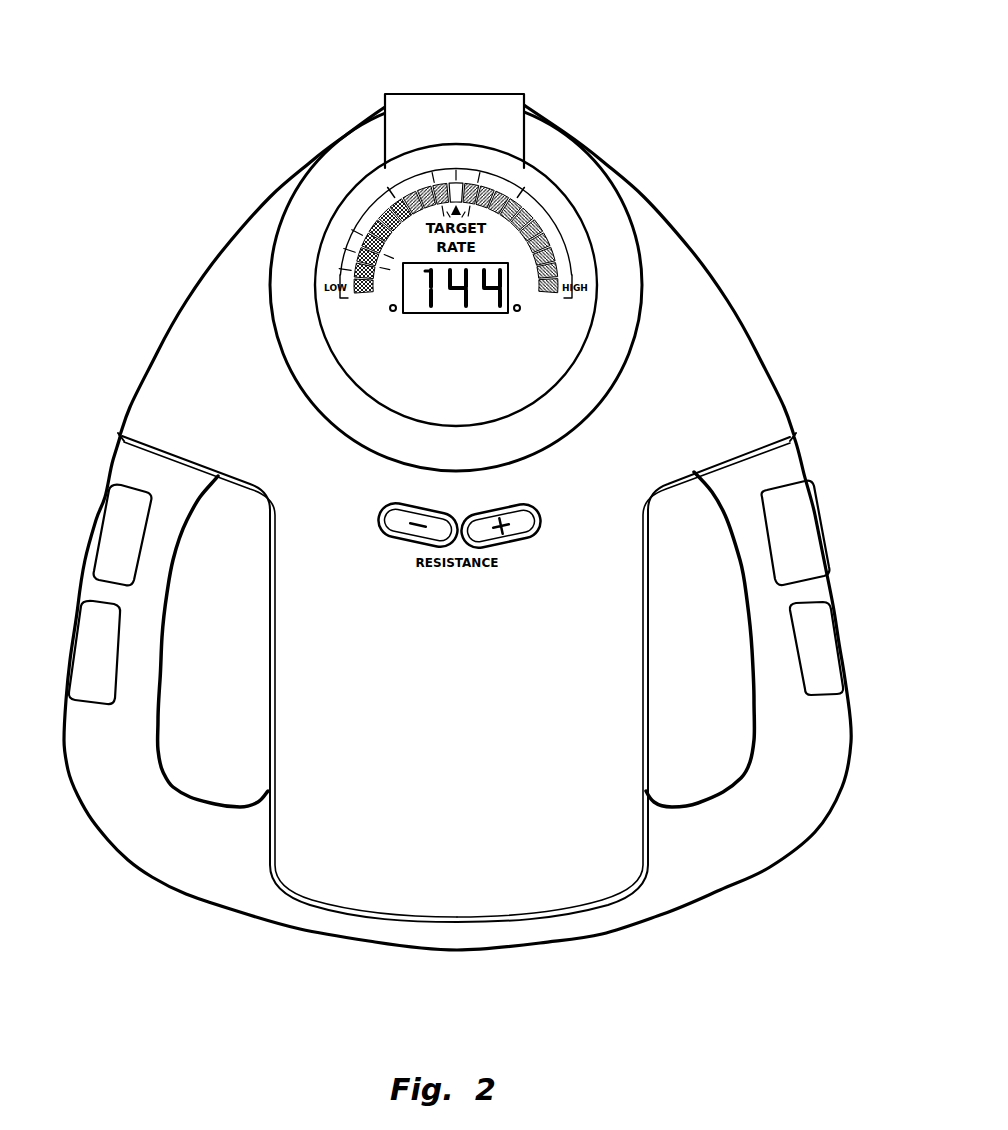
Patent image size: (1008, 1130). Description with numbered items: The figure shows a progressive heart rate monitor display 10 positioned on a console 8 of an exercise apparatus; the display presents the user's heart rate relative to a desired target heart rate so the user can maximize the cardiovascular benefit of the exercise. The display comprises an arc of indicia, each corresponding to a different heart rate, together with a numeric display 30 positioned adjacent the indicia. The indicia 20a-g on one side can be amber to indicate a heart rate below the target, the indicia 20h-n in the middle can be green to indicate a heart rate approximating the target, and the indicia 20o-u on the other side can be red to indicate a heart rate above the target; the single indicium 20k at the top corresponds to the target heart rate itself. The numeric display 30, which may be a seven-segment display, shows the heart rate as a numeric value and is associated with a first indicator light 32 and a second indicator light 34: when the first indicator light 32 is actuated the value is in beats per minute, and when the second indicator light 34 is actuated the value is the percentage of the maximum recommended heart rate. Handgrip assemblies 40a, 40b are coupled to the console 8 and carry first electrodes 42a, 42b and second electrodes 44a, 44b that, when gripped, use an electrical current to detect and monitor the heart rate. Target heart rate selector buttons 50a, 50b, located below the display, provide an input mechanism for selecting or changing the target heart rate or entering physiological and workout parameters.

The console 8 is at (613, 139).
The progressive heart rate monitor display 10 is at (623, 277).
The indicia 20a-g is at (348, 232).
The indicia 20h-n is at (495, 177).
The indicia 20k is at (458, 177).
The indicia 20o-u is at (563, 237).
The numeric display 30 is at (422, 316).
The first indicator light 32 is at (391, 311).
The second indicator light 34 is at (518, 311).
The handgrip assembly 40a is at (127, 457).
The handgrip assembly 40b is at (788, 466).
The first electrode 42a is at (114, 535).
The first electrode 42b is at (806, 533).
The second electrode 44a is at (85, 628).
The second electrode 44b is at (824, 634).
The target heart rate selector button 50a is at (403, 543).
The target heart rate selector button 50b is at (507, 545).